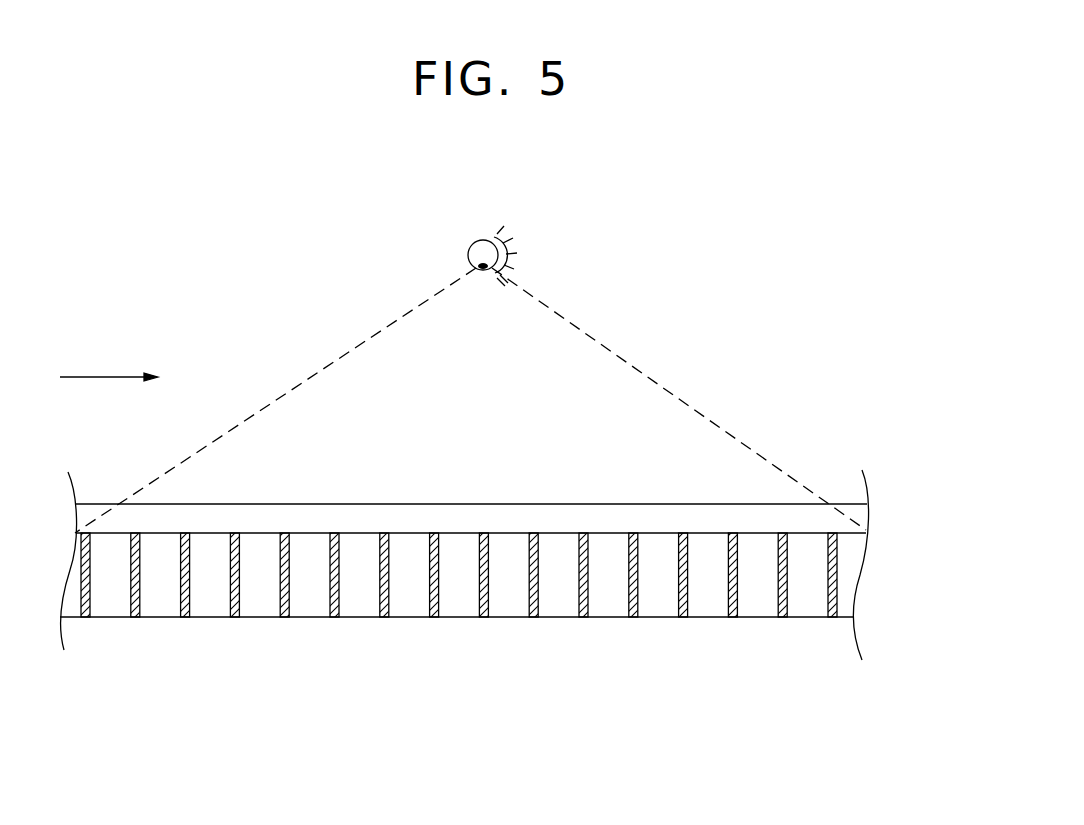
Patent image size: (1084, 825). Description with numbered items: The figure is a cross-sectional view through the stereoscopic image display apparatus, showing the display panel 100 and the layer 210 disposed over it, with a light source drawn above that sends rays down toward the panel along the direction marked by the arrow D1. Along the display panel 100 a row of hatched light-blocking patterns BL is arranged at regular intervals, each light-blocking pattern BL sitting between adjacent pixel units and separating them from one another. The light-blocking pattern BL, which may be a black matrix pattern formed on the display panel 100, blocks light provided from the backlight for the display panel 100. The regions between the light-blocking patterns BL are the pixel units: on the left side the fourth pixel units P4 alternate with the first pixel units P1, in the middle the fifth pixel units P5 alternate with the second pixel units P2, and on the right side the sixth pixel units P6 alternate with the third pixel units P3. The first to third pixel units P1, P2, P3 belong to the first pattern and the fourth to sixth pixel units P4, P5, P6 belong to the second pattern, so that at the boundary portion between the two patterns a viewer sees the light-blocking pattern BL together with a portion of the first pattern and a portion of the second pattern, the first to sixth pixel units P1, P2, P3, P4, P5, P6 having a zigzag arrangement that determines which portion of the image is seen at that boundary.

The display panel 100 is at (888, 535).
The light blocking layer 210 is at (856, 517).
The light-blocking pattern BL is at (334, 535).
The first direction D1 is at (128, 378).
The first pixel unit P1 is at (158, 548).
The second pixel unit P2 is at (409, 612).
The third pixel unit P3 is at (658, 548).
The fourth pixel unit P4 is at (108, 548).
The fifth pixel unit P5 is at (359, 612).
The sixth pixel unit P6 is at (608, 548).